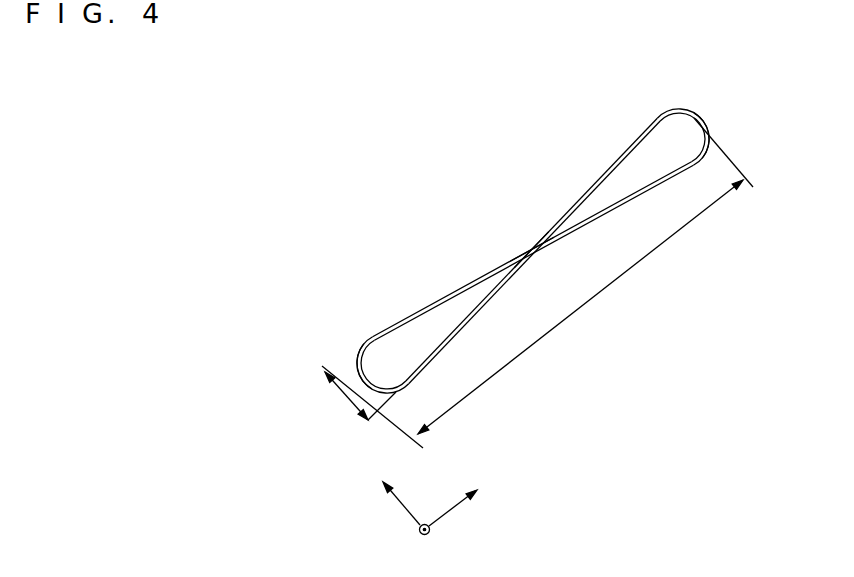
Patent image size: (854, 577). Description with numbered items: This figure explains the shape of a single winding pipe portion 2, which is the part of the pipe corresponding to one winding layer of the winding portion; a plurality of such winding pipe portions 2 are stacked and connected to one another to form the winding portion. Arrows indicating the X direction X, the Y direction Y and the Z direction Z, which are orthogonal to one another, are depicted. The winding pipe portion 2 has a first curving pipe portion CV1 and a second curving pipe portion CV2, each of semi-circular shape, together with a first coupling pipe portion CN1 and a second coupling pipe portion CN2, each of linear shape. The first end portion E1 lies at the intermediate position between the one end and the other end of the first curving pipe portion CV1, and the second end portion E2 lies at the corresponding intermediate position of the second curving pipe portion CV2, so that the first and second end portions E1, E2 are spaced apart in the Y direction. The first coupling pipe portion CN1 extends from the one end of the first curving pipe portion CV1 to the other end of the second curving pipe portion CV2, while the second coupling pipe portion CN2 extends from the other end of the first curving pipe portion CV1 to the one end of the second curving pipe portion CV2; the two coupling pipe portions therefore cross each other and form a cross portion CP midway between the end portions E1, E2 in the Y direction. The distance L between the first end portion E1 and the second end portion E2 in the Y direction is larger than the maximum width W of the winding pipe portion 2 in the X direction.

The winding pipe portion 2 is at (523, 218).
The first curving pipe portion CV1 is at (353, 347).
The second curving pipe portion CV2 is at (670, 108).
The first end portion E1 is at (365, 378).
The second end portion E2 is at (694, 118).
The cross portion CP is at (527, 245).
The first coupling pipe portion CN1 is at (433, 303).
The second coupling pipe portion CN2 is at (455, 332).
The distance L is at (585, 276).
The maximum width W is at (369, 407).
The X direction X is at (392, 489).
The Y direction Y is at (461, 498).
The Z direction Z is at (426, 546).